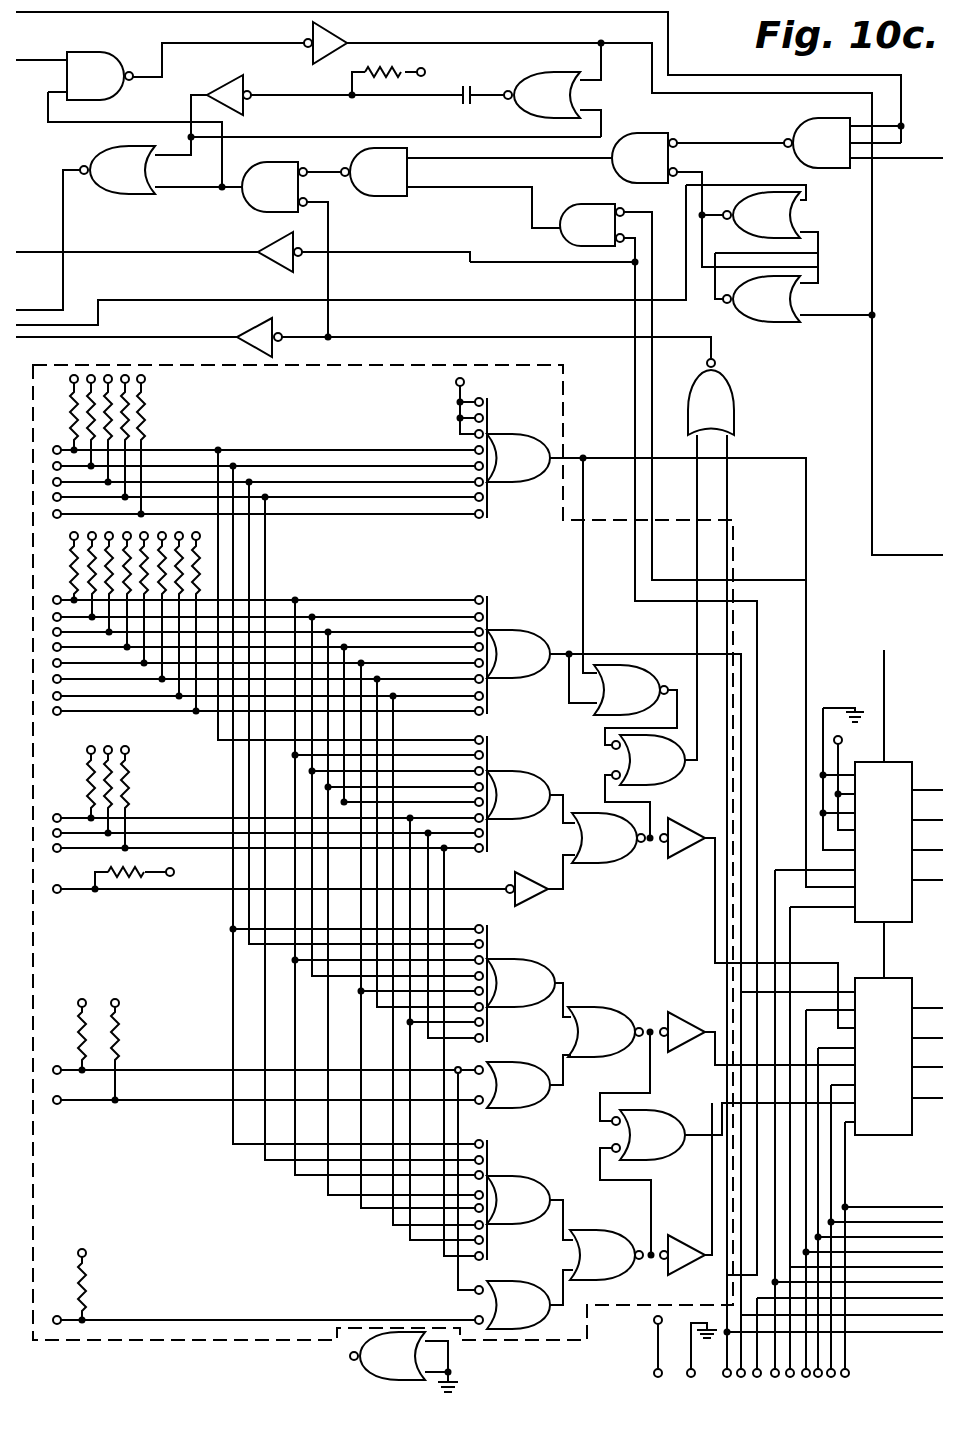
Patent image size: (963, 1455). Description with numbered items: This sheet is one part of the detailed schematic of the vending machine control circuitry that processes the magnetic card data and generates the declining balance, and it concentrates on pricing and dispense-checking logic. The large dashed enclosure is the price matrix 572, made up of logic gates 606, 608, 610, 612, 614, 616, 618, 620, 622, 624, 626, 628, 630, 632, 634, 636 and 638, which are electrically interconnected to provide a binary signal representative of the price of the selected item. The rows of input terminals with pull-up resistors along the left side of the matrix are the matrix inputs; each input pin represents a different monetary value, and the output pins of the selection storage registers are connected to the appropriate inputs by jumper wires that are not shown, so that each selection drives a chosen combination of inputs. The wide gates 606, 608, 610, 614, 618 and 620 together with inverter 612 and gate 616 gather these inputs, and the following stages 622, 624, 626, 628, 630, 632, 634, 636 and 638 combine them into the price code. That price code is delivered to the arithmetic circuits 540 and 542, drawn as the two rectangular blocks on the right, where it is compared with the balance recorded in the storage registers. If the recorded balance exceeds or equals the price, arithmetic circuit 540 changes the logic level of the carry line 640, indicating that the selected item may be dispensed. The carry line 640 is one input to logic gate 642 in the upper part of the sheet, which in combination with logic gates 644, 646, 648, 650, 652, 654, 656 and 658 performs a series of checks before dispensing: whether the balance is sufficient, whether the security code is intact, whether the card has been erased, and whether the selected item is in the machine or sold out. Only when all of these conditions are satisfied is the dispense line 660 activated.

The arithmetic circuit 540 is at (884, 762).
The arithmetic circuit 542 is at (884, 978).
The price matrix 572 is at (567, 371).
The logic gate 606 is at (550, 440).
The logic gate 608 is at (550, 636).
The logic gate 610 is at (550, 778).
The logic gate 612 is at (540, 876).
The logic gate 614 is at (532, 962).
The logic gate 616 is at (512, 1060).
The logic gate 618 is at (512, 1174).
The logic gate 620 is at (548, 1288).
The logic gate 622 is at (638, 665).
The logic gate 624 is at (668, 783).
The logic gate 626 is at (620, 862).
The logic gate 628 is at (692, 855).
The logic gate 630 is at (632, 997).
The logic gate 632 is at (672, 1012).
The logic gate 634 is at (652, 1109).
The logic gate 636 is at (624, 1216).
The logic gate 638 is at (690, 1236).
The carry line 640 is at (884, 668).
The logic gate 642 is at (570, 206).
The logic gate 644 is at (352, 153).
The logic gate 646 is at (246, 211).
The logic gate 648 is at (272, 269).
The logic gate 650 is at (100, 198).
The logic gate 652 is at (122, 96).
The logic gate 654 is at (232, 75).
The logic gate 656 is at (338, 52).
The logic gate 658 is at (530, 74).
The dispense line 660 is at (63, 283).